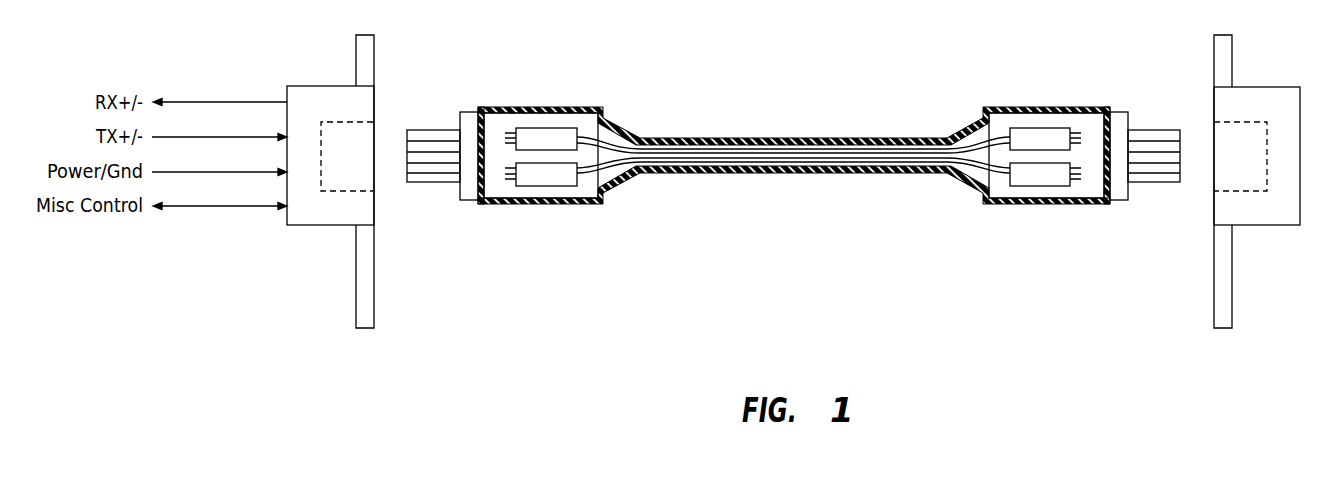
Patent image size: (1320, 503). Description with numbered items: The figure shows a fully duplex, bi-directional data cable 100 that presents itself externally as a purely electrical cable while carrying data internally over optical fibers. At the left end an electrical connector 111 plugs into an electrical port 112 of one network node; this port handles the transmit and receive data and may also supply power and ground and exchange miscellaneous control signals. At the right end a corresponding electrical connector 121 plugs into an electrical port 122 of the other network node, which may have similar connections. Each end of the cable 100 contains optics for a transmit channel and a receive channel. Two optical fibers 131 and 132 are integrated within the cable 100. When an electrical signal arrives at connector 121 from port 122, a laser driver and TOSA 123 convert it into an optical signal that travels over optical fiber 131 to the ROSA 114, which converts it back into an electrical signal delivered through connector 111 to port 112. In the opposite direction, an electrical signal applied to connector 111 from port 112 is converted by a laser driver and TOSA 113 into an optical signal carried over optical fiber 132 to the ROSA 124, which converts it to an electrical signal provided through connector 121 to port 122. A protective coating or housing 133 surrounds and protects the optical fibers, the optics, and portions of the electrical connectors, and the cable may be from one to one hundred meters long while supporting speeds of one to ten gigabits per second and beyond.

The data cable 100 is at (793, 172).
The electrical connector 111 is at (490, 109).
The electrical port 112 is at (375, 183).
The TOSA 113 is at (537, 177).
The ROSA 114 is at (543, 135).
The electrical connector 121 is at (1103, 108).
The electrical port 122 is at (1215, 213).
The TOSA 123 is at (1050, 135).
The ROSA 124 is at (1055, 216).
The optical fiber 131 is at (733, 153).
The optical fiber 132 is at (787, 160).
The protective coating or housing 133 is at (559, 194).